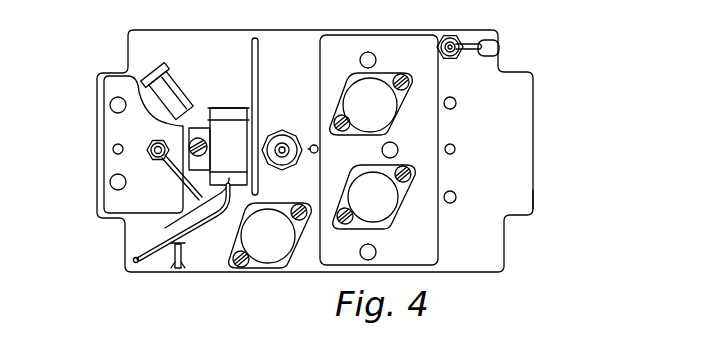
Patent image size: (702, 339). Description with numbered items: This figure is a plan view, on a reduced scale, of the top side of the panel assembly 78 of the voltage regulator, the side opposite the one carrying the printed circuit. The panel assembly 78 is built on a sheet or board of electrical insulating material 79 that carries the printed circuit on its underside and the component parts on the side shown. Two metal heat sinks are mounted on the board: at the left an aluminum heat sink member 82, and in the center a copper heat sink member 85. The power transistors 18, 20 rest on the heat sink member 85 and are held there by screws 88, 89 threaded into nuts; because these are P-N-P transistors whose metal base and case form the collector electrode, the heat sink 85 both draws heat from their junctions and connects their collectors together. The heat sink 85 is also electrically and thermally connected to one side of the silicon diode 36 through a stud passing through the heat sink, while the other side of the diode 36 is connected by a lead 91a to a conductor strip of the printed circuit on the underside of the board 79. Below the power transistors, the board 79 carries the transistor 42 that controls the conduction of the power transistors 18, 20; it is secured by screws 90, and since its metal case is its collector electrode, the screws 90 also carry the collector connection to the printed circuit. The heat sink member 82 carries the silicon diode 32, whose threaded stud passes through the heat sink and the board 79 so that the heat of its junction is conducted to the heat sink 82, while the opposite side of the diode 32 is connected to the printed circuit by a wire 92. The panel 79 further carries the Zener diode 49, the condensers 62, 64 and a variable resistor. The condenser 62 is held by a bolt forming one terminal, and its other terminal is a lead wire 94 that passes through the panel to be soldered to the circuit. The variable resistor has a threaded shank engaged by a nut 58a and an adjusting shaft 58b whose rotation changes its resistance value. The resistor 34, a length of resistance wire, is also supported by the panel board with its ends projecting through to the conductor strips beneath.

The panel assembly 78 is at (535, 151).
The board of electrical insulating material 79 is at (520, 203).
The heat sink member 82 is at (113, 120).
The silicon diode 32 is at (148, 152).
The condenser 64 is at (167, 88).
The condenser 62 is at (229, 108).
The resistor 34 is at (258, 62).
The nut 58a is at (280, 132).
The adjusting shaft 58b is at (282, 158).
The heat sink member 85 is at (428, 128).
The silicon diode 36 is at (463, 45).
The lead 91a is at (494, 52).
The power transistor 20 is at (371, 89).
The screws 88 is at (336, 118).
The power transistor 18 is at (387, 199).
The screws 89 is at (411, 175).
The transistor 42 is at (278, 247).
The screws 90 is at (305, 207).
The wire 92 is at (184, 212).
The lead wire 94 is at (147, 246).
The Zener diode 49 is at (183, 252).